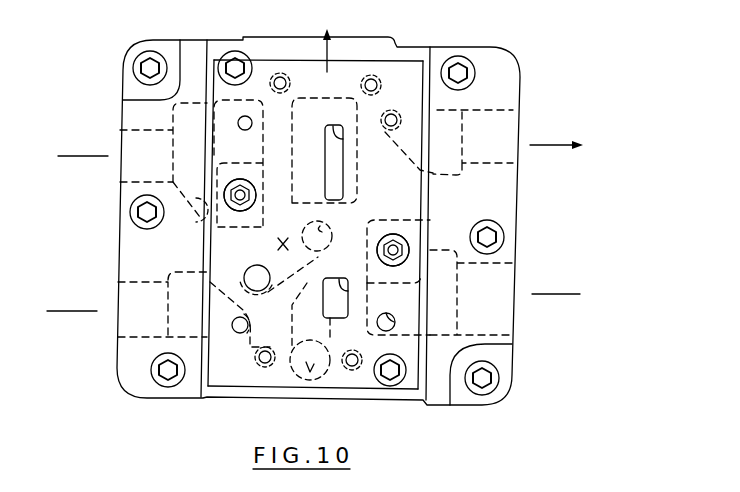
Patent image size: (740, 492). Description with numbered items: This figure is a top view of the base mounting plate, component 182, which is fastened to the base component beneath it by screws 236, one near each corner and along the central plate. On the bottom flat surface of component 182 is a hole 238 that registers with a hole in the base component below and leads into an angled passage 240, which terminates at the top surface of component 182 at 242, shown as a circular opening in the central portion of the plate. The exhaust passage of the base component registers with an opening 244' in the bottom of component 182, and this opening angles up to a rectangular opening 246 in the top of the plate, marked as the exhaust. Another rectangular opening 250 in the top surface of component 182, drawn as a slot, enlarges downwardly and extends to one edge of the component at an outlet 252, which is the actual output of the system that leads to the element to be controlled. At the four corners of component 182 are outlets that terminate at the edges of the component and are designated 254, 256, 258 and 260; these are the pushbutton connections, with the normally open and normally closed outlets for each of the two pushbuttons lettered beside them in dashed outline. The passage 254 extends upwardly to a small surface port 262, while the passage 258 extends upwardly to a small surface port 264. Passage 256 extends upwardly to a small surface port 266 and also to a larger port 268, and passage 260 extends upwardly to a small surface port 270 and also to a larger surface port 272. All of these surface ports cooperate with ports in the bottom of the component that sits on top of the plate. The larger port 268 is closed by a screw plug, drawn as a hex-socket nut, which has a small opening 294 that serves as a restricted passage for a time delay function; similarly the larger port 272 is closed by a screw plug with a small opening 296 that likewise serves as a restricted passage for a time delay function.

The component 182 is at (242, 37).
The screws 236 is at (148, 68).
The hole 238 is at (330, 225).
The angled passage 240 is at (279, 243).
The termination of angled passage 242 is at (250, 277).
The opening 244' is at (279, 386).
The rectangular opening 246 is at (360, 272).
The rectangular opening 250 is at (333, 127).
The outlet 252 is at (360, 51).
The outlet passage 254 is at (500, 127).
The outlet passage 256 is at (500, 290).
The outlet passage 258 is at (137, 320).
The outlet passage 260 is at (150, 143).
The small surface port 262 is at (393, 116).
The small surface port 264 is at (238, 330).
The small surface port 266 is at (394, 322).
The larger port 268 is at (398, 246).
The small surface port 270 is at (246, 127).
The larger surface port 272 is at (232, 186).
The small opening 294 is at (403, 250).
The small opening 296 is at (240, 198).